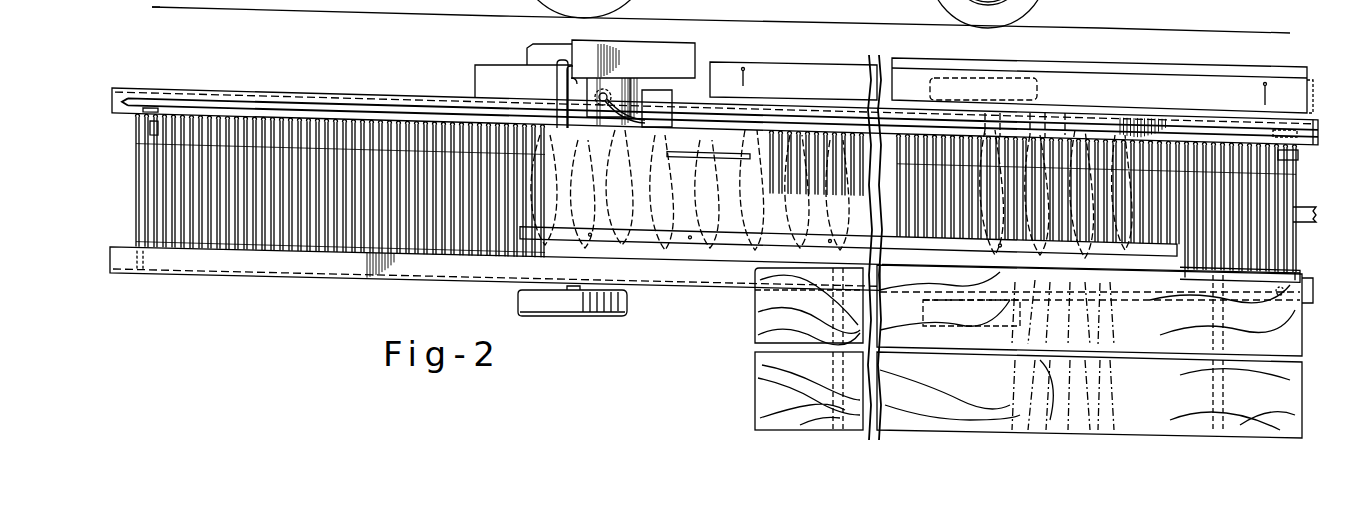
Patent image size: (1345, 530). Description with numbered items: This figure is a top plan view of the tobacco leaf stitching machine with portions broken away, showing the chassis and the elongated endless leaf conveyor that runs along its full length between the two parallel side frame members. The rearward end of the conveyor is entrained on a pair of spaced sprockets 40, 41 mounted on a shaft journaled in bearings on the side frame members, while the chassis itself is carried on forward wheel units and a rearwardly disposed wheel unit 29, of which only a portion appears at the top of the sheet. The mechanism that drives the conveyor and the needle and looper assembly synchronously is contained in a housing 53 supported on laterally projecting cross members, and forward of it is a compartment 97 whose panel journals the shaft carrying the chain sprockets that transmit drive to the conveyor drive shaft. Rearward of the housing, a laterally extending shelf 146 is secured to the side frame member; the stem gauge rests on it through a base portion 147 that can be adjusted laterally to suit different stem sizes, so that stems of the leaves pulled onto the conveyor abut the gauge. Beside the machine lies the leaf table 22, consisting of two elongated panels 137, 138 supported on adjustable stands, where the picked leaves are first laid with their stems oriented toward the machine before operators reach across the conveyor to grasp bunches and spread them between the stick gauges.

The leaf table 22 is at (753, 334).
The rearwardly disposed wheel unit 29 is at (1037, 2).
The sprocket 40 is at (1298, 159).
The sprocket 41 is at (1240, 274).
The housing 53 is at (668, 45).
The compartment 97 is at (491, 64).
The elongated panel 137 is at (762, 302).
The elongated panel 138 is at (755, 392).
The laterally extending shelf 146 is at (1143, 66).
The base portion 147 is at (810, 70).